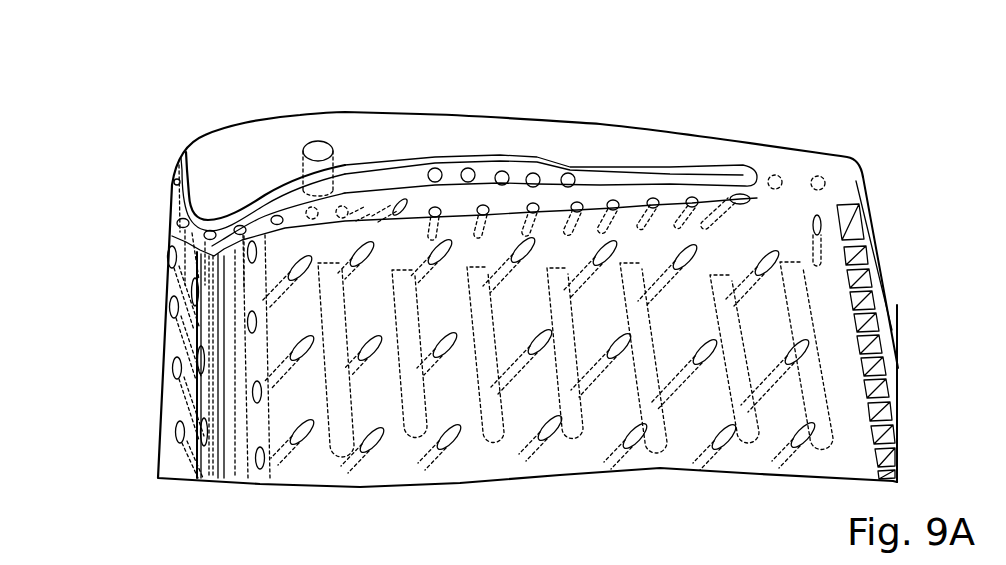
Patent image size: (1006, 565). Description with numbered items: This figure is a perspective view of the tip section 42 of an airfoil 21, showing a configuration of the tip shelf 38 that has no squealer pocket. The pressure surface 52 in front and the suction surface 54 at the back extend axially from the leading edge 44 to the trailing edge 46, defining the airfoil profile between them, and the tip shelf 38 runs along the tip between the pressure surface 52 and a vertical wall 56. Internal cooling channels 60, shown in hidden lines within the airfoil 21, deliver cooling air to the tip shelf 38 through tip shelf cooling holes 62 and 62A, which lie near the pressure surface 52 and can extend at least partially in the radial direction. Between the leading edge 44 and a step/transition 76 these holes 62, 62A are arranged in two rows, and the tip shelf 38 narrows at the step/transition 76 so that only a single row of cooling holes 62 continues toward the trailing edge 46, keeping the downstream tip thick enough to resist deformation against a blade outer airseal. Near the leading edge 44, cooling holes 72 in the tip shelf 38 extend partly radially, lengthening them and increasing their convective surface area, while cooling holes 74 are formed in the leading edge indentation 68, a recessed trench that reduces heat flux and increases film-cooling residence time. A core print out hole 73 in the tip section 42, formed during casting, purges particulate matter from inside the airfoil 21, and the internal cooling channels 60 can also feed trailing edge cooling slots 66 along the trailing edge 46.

The airfoil 21 is at (162, 105).
The tip section 42 is at (106, 132).
The cooling holes 72 is at (180, 226).
The core print out hole 73 is at (316, 141).
The tip shelf cooling holes 62 is at (432, 207).
The cooling holes 62A is at (435, 168).
The tip shelf 38 is at (471, 196).
The suction surface 54 is at (566, 90).
The step/transition 76 is at (631, 212).
The vertical wall 56 is at (742, 160).
The trailing edge 46 is at (870, 190).
The trailing edge cooling slots 66 is at (866, 272).
The leading edge indentation 68 is at (194, 270).
The leading edge 44 is at (218, 328).
The cooling holes 74 is at (179, 430).
The internal cooling channels 60 is at (250, 442).
The pressure surface 52 is at (741, 455).